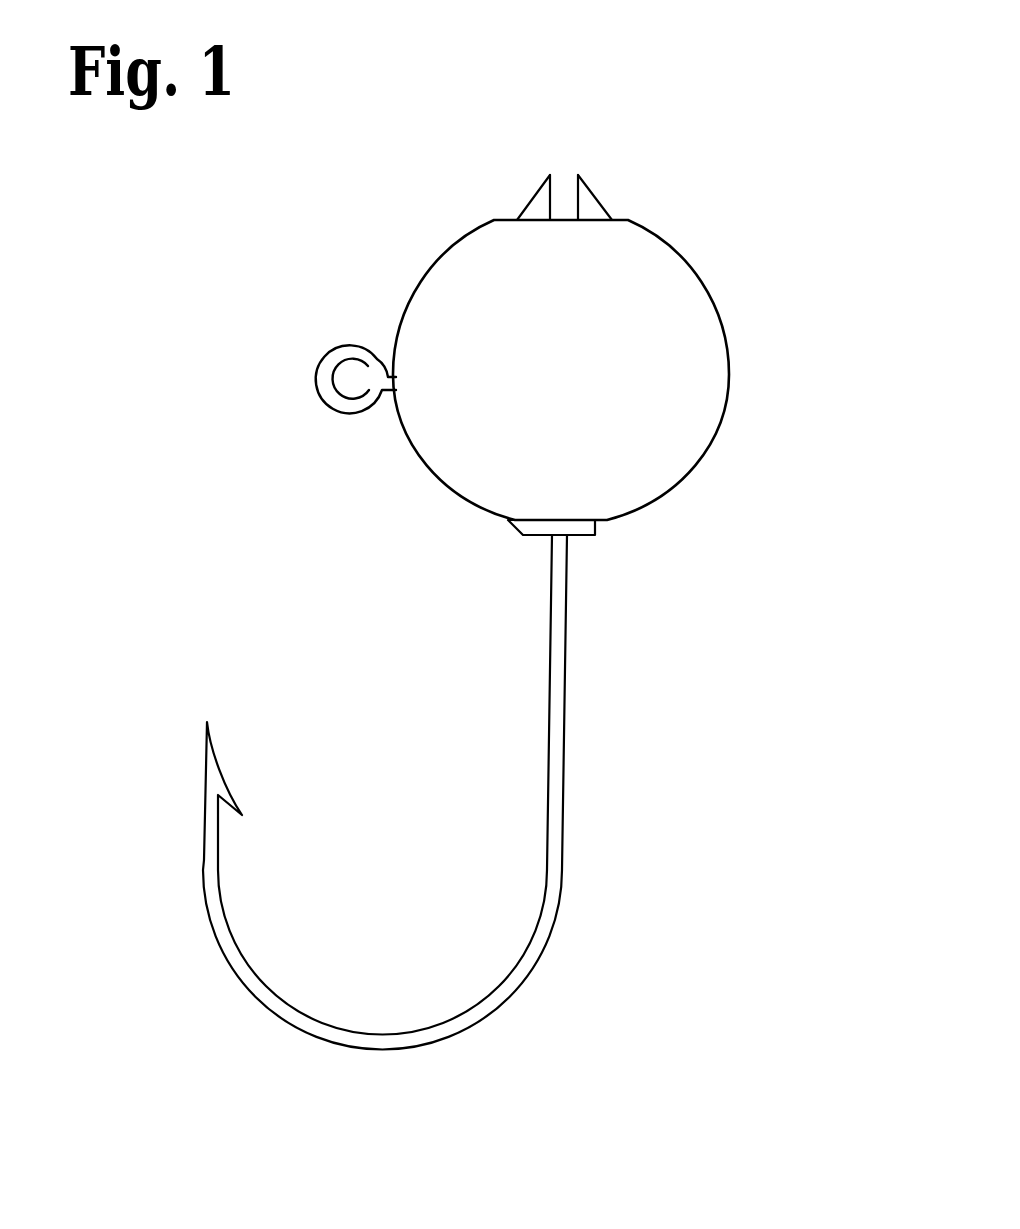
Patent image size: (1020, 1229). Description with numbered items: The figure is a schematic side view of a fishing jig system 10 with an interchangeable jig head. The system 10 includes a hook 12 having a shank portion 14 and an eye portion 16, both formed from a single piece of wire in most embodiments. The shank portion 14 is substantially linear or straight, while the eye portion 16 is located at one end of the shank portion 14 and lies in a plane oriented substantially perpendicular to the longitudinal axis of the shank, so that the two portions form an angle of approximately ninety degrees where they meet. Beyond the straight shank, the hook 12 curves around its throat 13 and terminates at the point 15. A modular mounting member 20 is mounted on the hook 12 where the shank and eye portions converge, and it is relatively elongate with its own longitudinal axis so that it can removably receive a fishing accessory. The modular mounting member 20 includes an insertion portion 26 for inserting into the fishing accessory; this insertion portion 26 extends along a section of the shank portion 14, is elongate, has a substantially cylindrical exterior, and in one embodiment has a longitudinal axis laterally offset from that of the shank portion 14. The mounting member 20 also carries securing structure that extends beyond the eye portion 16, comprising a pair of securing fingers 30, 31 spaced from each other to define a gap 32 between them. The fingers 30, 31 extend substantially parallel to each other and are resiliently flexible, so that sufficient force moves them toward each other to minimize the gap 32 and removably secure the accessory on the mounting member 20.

The system 10 is at (785, 187).
The hook 12 is at (553, 840).
The throat 13 is at (381, 710).
The shank portion 14 is at (553, 752).
The point 15 is at (205, 715).
The eye portion 16 is at (361, 349).
The modular mounting member 20 is at (583, 526).
The insertion portion 26 is at (577, 537).
The securing finger 30 is at (537, 205).
The securing finger 31 is at (586, 203).
The gap 32 is at (570, 143).